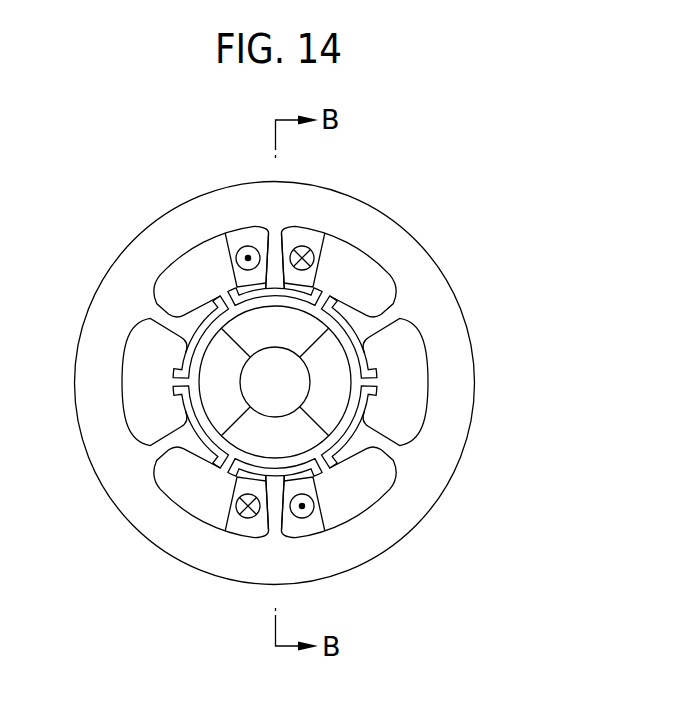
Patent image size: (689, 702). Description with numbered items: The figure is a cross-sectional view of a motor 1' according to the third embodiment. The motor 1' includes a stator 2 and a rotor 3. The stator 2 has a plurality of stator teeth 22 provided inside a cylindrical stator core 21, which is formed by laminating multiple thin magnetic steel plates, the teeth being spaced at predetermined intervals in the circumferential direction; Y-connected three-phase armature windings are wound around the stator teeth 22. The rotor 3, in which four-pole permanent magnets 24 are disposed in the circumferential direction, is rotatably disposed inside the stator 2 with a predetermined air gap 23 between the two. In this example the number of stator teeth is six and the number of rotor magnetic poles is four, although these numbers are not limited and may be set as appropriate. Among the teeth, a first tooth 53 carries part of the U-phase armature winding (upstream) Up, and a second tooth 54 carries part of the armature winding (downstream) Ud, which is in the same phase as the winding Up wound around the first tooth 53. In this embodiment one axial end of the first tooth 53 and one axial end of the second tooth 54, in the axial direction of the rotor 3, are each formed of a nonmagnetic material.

The motor 1' is at (320, 392).
The stator 2 is at (423, 600).
The stator core 21 is at (184, 214).
The stator teeth 22 is at (156, 313).
The air gap 23 is at (327, 450).
The permanent magnets 24 is at (206, 371).
The rotor 3 is at (240, 472).
The first tooth 53 is at (268, 230).
The second tooth 54 is at (270, 536).
The U-phase armature winding (upstream) Up is at (320, 220).
The armature winding (downstream) Ud is at (230, 560).